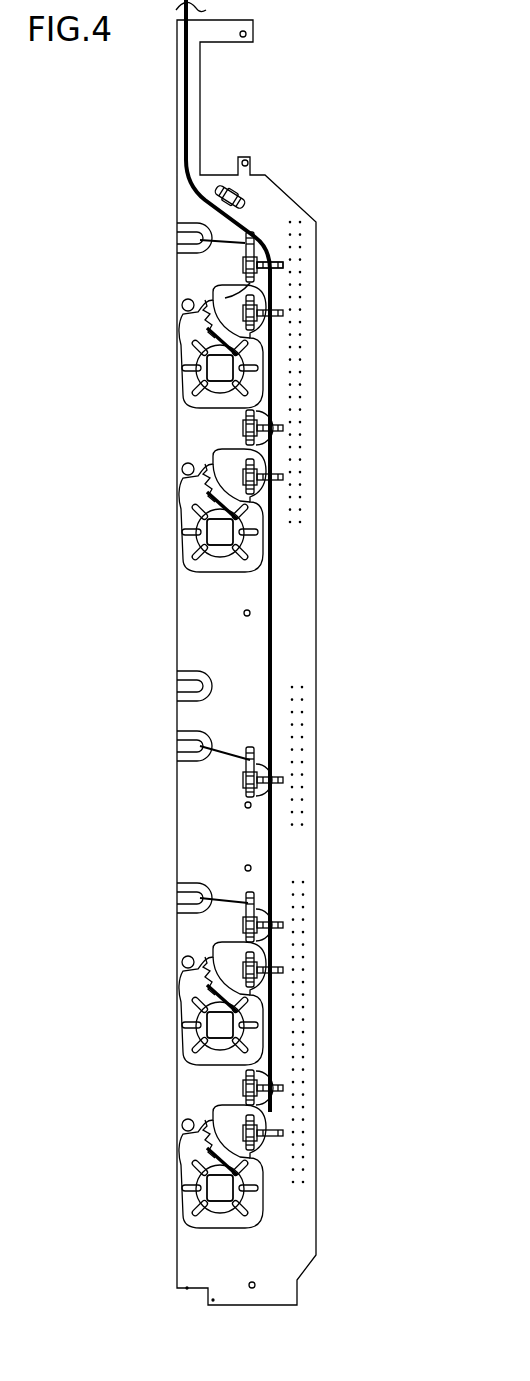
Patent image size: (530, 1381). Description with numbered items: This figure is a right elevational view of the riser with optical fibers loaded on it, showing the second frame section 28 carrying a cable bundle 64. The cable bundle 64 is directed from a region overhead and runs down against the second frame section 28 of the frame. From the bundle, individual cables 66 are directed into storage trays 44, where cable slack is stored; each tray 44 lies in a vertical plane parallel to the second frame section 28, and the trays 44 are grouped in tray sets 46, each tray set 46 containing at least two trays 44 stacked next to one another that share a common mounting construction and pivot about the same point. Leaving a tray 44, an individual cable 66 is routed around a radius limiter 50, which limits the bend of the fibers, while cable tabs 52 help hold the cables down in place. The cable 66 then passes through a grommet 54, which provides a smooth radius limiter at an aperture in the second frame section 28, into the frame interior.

The second frame section 28 is at (308, 120).
The tray 44 is at (188, 389).
The tray set 46 is at (157, 338).
The radius limiter 50 is at (255, 248).
The cable tab 52 is at (284, 266).
The grommet 54 is at (186, 250).
The cable bundle 64 is at (184, 118).
The individual cable 66 is at (231, 243).